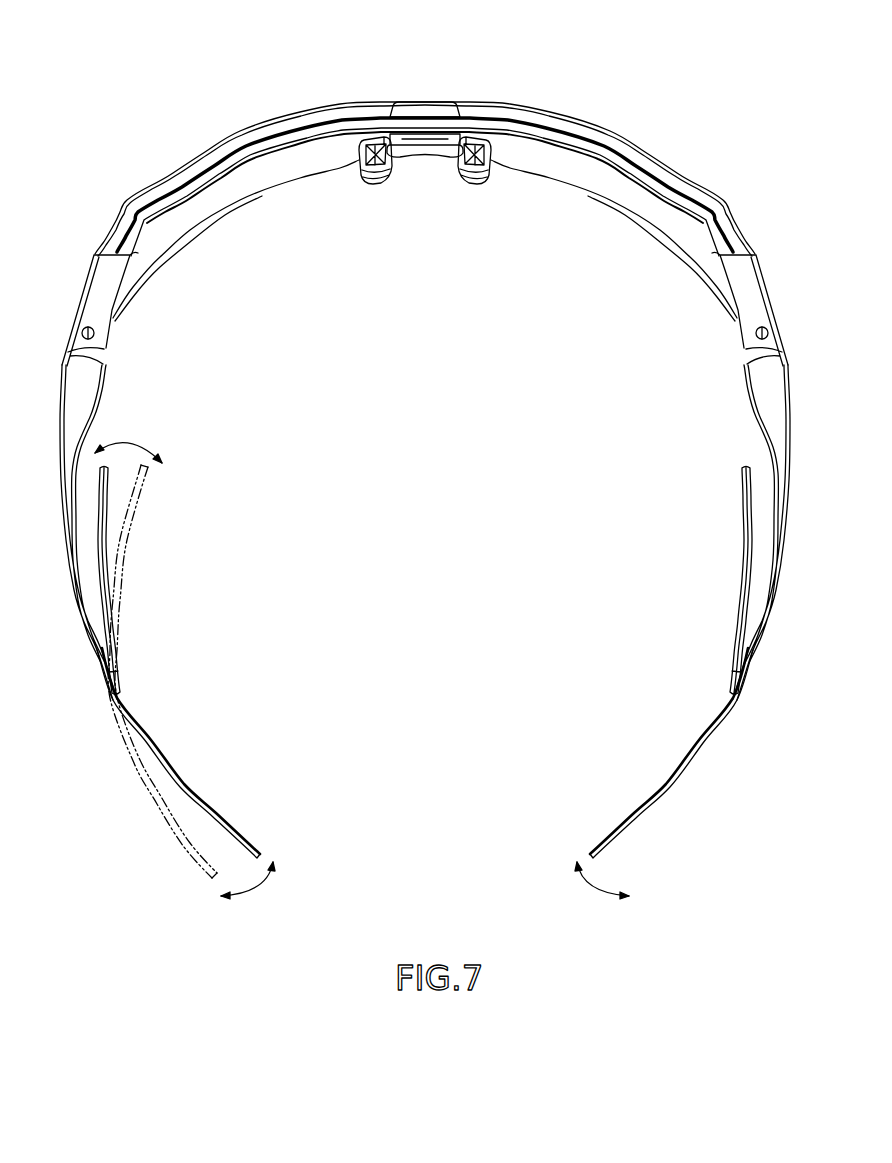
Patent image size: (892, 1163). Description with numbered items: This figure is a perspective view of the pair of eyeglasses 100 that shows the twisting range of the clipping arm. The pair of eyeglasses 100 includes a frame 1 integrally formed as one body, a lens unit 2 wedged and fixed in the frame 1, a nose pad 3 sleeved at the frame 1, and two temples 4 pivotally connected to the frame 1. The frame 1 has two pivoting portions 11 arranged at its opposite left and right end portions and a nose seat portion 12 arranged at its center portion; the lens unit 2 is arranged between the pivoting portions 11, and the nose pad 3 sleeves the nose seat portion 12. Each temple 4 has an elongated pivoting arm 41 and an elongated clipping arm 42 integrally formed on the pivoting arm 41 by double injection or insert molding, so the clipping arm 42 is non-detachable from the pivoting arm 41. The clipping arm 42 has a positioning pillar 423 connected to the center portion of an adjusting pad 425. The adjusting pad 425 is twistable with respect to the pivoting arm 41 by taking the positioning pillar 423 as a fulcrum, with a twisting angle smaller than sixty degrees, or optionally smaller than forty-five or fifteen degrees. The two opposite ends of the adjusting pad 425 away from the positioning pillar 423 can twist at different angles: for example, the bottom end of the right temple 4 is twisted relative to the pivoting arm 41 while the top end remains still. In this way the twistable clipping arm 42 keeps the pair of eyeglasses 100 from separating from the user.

The pair of eyeglasses 100 is at (88, 49).
The frame 1 is at (437, 97).
The lens unit 2 is at (571, 183).
The nose pad 3 is at (384, 183).
The nose seat portion 12 is at (432, 150).
The pivoting portion 11 is at (740, 282).
The temple 4 is at (719, 613).
The pivoting arm 41 is at (770, 381).
The clipping arm 42 is at (662, 789).
The positioning pillar 423 is at (746, 652).
The adjusting pad 425 is at (696, 758).